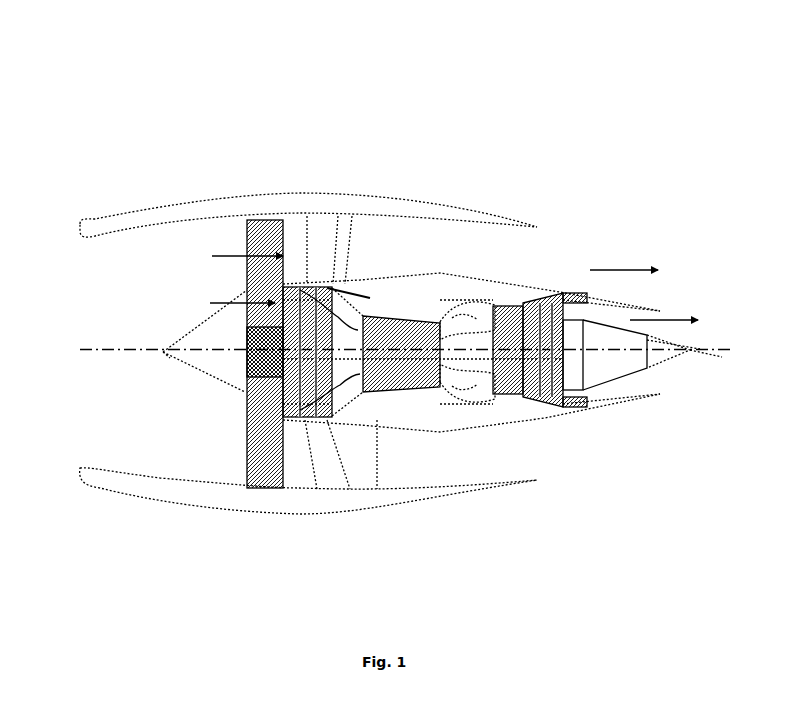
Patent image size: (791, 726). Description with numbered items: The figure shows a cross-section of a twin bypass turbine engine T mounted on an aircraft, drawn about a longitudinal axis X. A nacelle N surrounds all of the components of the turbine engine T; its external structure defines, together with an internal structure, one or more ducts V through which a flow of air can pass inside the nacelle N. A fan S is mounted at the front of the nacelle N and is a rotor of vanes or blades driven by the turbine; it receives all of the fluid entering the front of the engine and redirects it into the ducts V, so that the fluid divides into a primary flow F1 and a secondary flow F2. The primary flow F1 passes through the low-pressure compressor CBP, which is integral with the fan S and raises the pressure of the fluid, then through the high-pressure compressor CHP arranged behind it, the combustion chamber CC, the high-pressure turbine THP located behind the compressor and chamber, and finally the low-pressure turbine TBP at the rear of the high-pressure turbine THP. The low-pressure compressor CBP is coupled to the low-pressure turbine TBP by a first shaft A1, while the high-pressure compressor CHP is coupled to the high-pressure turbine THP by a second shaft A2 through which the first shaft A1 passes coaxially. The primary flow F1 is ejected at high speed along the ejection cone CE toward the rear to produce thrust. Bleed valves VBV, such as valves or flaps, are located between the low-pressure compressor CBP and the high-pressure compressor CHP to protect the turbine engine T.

The turbine engine T is at (158, 100).
The nacelle N is at (100, 223).
The longitudinal axis X is at (406, 336).
The fan S is at (258, 223).
The duct V is at (435, 250).
The bleed valve VBV is at (338, 287).
The first shaft A1 is at (348, 345).
The second shaft A2 is at (484, 375).
The low-pressure compressor CBP is at (367, 412).
The high-pressure compressor CHP is at (397, 367).
The combustion chamber CC is at (464, 327).
The high-pressure turbine THP is at (495, 330).
The low-pressure turbine TBP is at (540, 415).
The ejection cone CE is at (604, 355).
The primary flow F1 is at (454, 301).
The secondary flow F2 is at (435, 252).